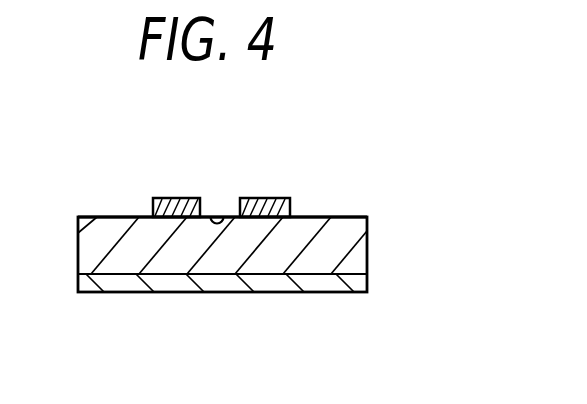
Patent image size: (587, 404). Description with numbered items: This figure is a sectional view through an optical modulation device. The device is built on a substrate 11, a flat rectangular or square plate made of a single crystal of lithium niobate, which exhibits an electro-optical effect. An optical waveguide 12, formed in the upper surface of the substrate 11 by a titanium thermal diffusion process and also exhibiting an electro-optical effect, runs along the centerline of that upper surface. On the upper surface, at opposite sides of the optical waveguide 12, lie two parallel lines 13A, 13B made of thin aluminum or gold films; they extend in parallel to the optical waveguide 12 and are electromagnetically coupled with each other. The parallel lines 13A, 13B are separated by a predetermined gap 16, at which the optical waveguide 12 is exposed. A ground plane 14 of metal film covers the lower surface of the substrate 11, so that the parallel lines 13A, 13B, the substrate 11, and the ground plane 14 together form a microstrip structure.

The substrate 11 is at (357, 262).
The optical waveguide 12 is at (220, 216).
The parallel line 13A is at (162, 198).
The parallel line 13B is at (275, 200).
The ground plane 14 is at (225, 292).
The gap 16 is at (212, 205).